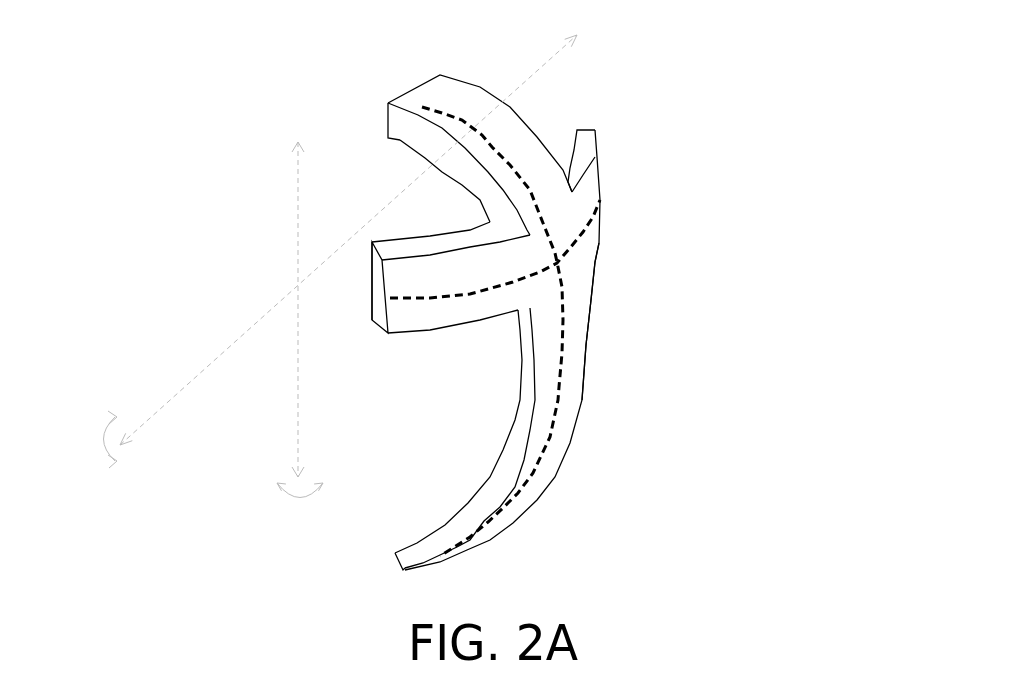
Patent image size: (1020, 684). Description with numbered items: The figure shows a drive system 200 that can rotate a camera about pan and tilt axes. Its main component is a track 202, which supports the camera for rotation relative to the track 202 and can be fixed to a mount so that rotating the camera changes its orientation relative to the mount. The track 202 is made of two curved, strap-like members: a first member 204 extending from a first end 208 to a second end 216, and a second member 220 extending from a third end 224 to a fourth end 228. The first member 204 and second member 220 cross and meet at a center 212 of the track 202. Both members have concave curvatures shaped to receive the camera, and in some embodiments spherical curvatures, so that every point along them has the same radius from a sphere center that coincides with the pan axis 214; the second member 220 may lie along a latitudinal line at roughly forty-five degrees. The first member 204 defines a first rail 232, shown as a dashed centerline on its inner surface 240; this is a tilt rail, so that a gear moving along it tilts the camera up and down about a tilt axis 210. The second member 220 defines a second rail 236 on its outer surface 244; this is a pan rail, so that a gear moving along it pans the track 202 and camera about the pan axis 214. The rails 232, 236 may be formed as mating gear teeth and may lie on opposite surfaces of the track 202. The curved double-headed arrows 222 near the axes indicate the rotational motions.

The drive system 200 is at (513, 41).
The track 202 is at (326, 141).
The first member 204 is at (422, 143).
The first end 208 is at (412, 97).
The tilt axis 210 is at (198, 373).
The center 212 is at (563, 263).
The pan axis 214 is at (297, 287).
The second end 216 is at (395, 555).
The second member 220 is at (430, 340).
The rotation direction about second axis 222 is at (298, 460).
The third end 224 is at (382, 270).
The fourth end 228 is at (596, 157).
The first rail 232 is at (497, 141).
The second rail 236 is at (467, 300).
The inner surface 240 is at (418, 497).
The outer surface 244 is at (614, 420).